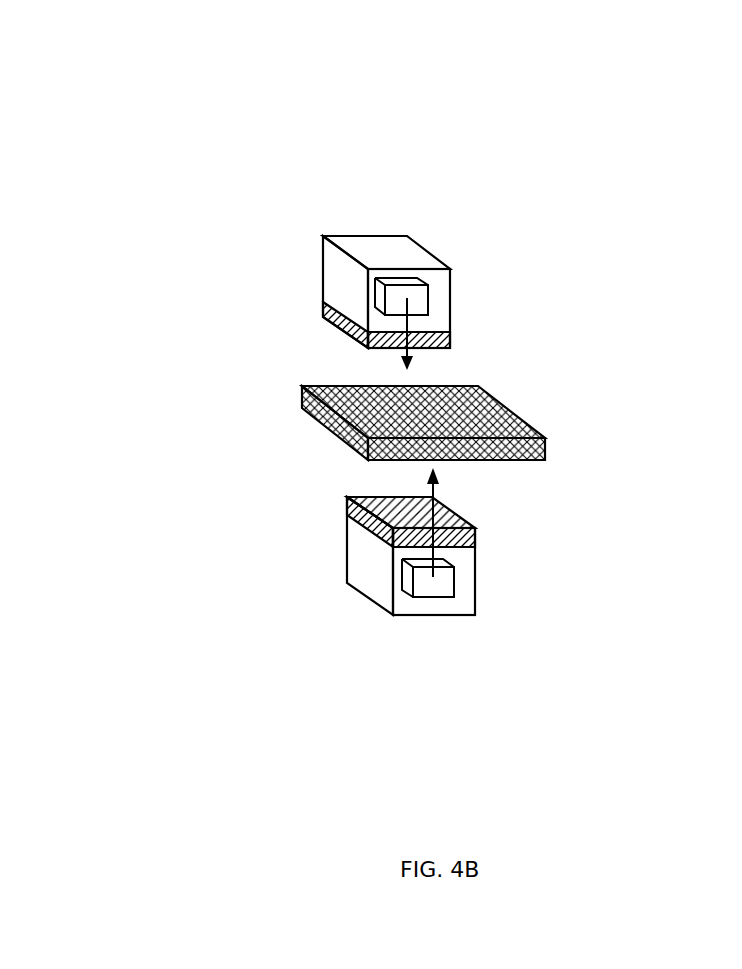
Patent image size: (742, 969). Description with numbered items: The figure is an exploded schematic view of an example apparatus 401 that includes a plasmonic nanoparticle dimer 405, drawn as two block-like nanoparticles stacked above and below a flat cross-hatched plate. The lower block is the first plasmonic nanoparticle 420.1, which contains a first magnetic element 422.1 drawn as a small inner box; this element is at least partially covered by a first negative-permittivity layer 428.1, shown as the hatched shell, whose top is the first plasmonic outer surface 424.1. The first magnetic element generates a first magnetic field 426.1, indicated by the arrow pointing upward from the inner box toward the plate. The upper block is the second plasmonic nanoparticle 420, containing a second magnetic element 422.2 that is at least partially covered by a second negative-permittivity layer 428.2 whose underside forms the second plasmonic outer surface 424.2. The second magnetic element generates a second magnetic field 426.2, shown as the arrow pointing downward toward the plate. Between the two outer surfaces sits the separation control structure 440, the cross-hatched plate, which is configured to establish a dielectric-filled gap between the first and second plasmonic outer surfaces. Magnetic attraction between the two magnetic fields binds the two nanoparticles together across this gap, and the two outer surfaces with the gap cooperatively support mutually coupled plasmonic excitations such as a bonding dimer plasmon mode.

The apparatus 401 is at (626, 71).
The plasmonic nanoparticle dimer 405 is at (593, 178).
The second plasmonic nanoparticle 420 is at (385, 236).
The first plasmonic nanoparticle 420.1 is at (433, 615).
The second magnetic element 422.2 is at (430, 300).
The first magnetic element 422.1 is at (454, 582).
The second plasmonic outer surface 424.2 is at (345, 338).
The first plasmonic outer surface 424.1 is at (403, 513).
The second magnetic field 426.2 is at (412, 369).
The first magnetic field 426.1 is at (450, 513).
The second negative-permittivity layer 428.2 is at (330, 323).
The first negative-permittivity layer 428.1 is at (347, 508).
The separation control structure 440 is at (320, 418).